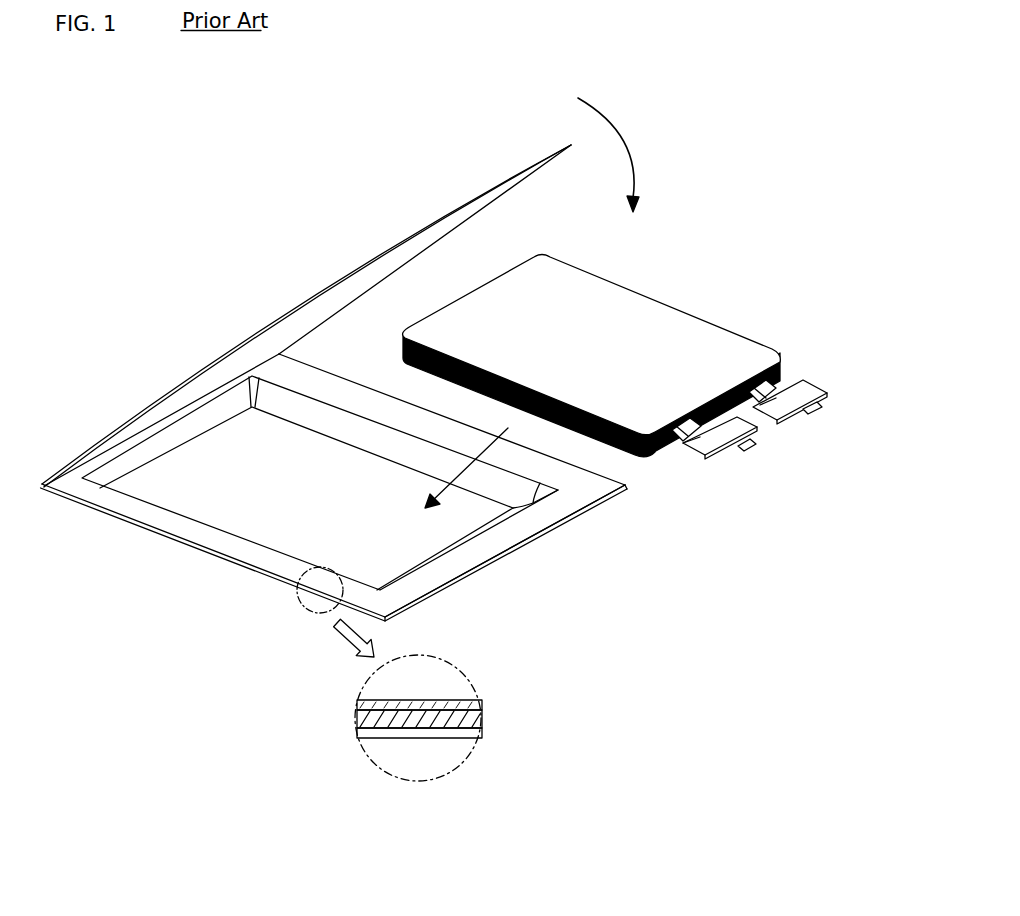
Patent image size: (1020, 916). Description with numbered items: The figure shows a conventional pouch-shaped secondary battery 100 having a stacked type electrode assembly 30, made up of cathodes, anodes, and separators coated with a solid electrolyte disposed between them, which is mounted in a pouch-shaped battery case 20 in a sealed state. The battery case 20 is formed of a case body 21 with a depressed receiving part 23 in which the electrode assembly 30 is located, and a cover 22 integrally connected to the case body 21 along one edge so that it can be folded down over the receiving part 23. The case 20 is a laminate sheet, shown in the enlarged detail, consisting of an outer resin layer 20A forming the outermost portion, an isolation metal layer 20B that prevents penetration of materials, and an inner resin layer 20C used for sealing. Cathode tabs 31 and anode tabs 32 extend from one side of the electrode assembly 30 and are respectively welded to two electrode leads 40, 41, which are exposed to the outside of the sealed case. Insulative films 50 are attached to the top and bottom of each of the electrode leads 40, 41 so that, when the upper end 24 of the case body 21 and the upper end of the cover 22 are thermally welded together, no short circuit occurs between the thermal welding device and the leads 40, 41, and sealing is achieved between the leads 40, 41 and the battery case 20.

The battery pack 100 is at (97, 145).
The pouch-shaped battery case 20 is at (140, 345).
The case body 21 is at (243, 563).
The cover 22 is at (365, 260).
The depressed receiving part 23 is at (193, 500).
The upper end of the case body 24 is at (482, 553).
The electrode assembly 30 is at (675, 322).
The cathode tabs 31 is at (780, 357).
The anode tabs 32 is at (670, 450).
The electrode lead 40 is at (827, 393).
The electrode lead 41 is at (743, 440).
The insulative films 50 is at (747, 437).
The outer resin layer 20A is at (463, 734).
The isolation metal layer 20B is at (478, 718).
The inner resin layer 20C is at (463, 704).